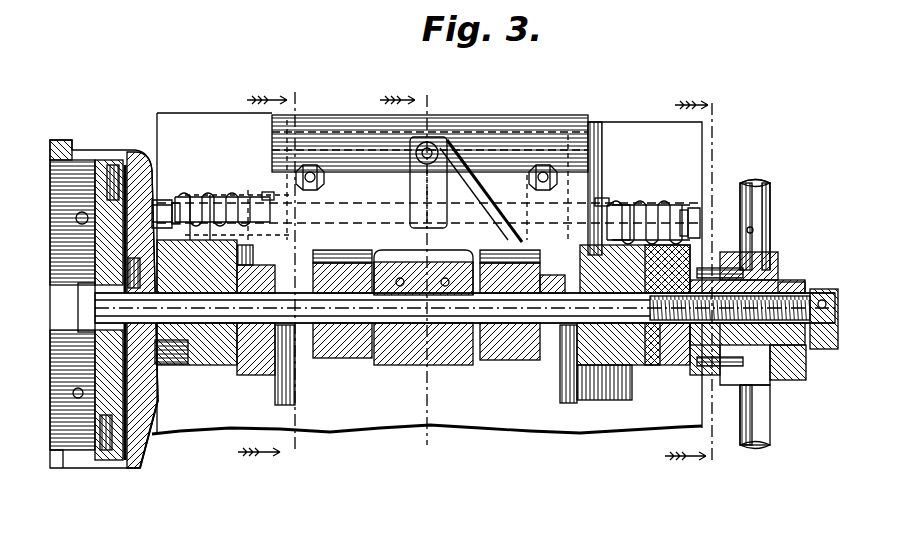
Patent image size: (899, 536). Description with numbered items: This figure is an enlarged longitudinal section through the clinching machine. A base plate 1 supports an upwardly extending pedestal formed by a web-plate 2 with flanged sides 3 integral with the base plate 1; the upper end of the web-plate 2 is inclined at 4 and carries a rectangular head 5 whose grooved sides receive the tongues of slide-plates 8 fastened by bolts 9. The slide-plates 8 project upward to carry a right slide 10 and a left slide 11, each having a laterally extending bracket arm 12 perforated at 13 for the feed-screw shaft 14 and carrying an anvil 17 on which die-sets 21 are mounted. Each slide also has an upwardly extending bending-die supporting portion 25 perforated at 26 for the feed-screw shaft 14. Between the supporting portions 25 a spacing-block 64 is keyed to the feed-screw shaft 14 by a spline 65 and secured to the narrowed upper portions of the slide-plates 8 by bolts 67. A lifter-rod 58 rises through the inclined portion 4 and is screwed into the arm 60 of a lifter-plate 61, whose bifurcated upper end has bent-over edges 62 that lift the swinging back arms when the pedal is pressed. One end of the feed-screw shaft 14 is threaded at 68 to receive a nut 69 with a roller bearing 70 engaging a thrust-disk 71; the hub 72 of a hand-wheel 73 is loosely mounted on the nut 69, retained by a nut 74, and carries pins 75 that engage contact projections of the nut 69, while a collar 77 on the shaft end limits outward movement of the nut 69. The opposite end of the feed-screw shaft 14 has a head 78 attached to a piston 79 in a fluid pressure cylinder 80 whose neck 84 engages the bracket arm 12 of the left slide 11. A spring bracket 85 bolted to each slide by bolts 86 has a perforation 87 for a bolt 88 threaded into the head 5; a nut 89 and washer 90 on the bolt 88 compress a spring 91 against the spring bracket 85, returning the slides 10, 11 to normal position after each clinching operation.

The base plate 1 is at (540, 432).
The web-plate 2 is at (545, 135).
The flanged sides 3 is at (272, 120).
The inclined upper end 4 is at (529, 91).
The rectangular head 5 is at (418, 277).
The slide-plates 8 is at (345, 165).
The bolts 9 is at (311, 165).
The right slide 10 is at (745, 262).
The left slide 11 is at (236, 270).
The bracket arm 12 is at (205, 355).
The perforation 13 is at (572, 441).
The feed-screw shaft 14 is at (182, 262).
The anvils 17 is at (280, 372).
The die-sets 21 is at (703, 287).
The bending-die supporting portion 25 is at (328, 360).
The perforation 26 is at (335, 375).
The lifter-rod 58 is at (330, 240).
The arm 60 is at (418, 185).
The lifter-plate 61 is at (462, 232).
The bent-over edges 62 is at (350, 250).
The spacing-block 64 is at (445, 290).
The spline 65 is at (445, 366).
The bolts 67 is at (396, 366).
The threaded end portion 68 is at (786, 350).
The nut 69 is at (770, 400).
The roller bearing 70 is at (700, 380).
The thrust-disk 71 is at (672, 366).
The hub 72 is at (778, 275).
The hand-wheel 73 is at (763, 186).
The nut 74 is at (802, 285).
The pins 75 is at (766, 236).
The collar 77 is at (820, 352).
The head 78 is at (84, 335).
The piston 79 is at (100, 468).
The fluid pressure cylinder 80 is at (150, 455).
The neck 84 is at (170, 366).
The spring bracket 85 is at (270, 193).
The bolts 86 is at (638, 222).
The perforation 87 is at (258, 200).
The bolt 88 is at (200, 195).
The nut 89 is at (157, 205).
The washer 90 is at (173, 200).
The spring 91 is at (200, 196).